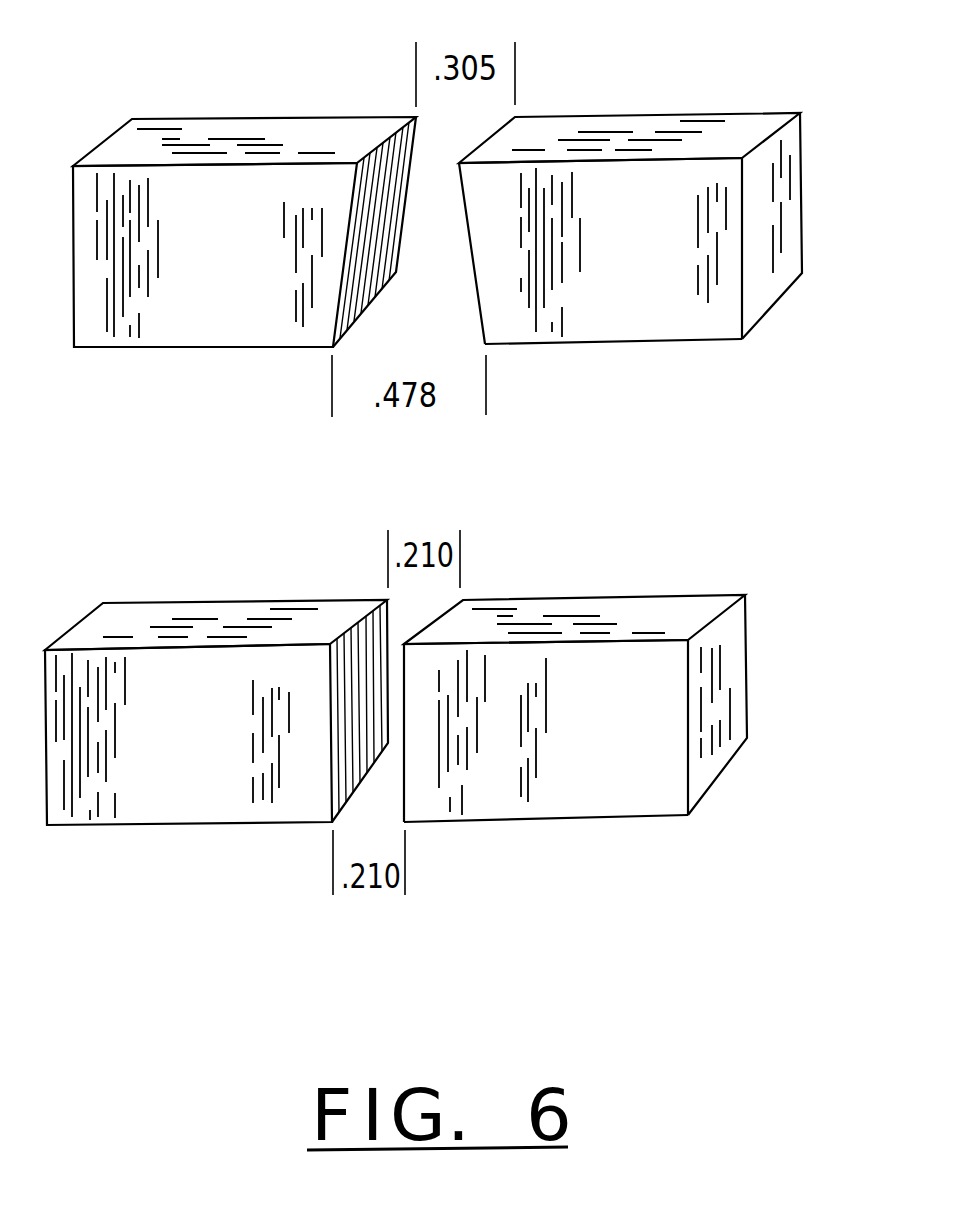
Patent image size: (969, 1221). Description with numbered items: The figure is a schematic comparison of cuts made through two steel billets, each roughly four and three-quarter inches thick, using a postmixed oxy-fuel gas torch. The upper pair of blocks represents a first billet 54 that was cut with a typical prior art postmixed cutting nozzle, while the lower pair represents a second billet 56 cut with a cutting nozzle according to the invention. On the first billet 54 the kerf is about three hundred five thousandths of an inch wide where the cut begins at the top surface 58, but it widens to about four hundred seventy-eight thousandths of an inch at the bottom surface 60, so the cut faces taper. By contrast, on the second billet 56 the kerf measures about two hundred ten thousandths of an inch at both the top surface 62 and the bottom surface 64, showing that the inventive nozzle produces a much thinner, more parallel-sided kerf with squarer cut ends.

The first billet 54 is at (690, 289).
The second billet 56 is at (633, 769).
The top surface of the first billet 58 is at (333, 132).
The bottom surface of the first billet 60 is at (675, 341).
The top surface of the second billet 62 is at (147, 612).
The bottom surface of the second billet 64 is at (622, 817).